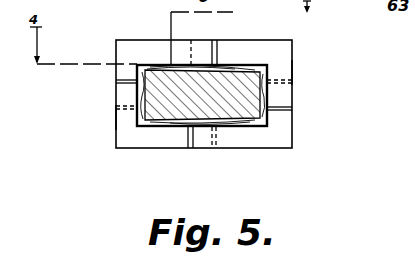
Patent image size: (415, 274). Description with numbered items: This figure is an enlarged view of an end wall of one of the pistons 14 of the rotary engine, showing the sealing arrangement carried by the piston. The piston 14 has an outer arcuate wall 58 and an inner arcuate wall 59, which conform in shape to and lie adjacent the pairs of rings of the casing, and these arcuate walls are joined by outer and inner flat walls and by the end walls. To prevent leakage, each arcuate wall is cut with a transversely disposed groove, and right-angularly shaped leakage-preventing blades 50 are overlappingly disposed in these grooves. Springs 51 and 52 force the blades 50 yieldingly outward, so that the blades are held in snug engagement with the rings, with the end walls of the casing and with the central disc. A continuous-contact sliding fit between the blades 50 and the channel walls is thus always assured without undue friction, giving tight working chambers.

The piston 14 is at (240, 108).
The leakage-preventing blade 50 is at (123, 57).
The spring 51 is at (230, 67).
The spring 52 is at (143, 91).
The outer arcuate wall 58 is at (292, 72).
The inner arcuate wall 59 is at (112, 118).